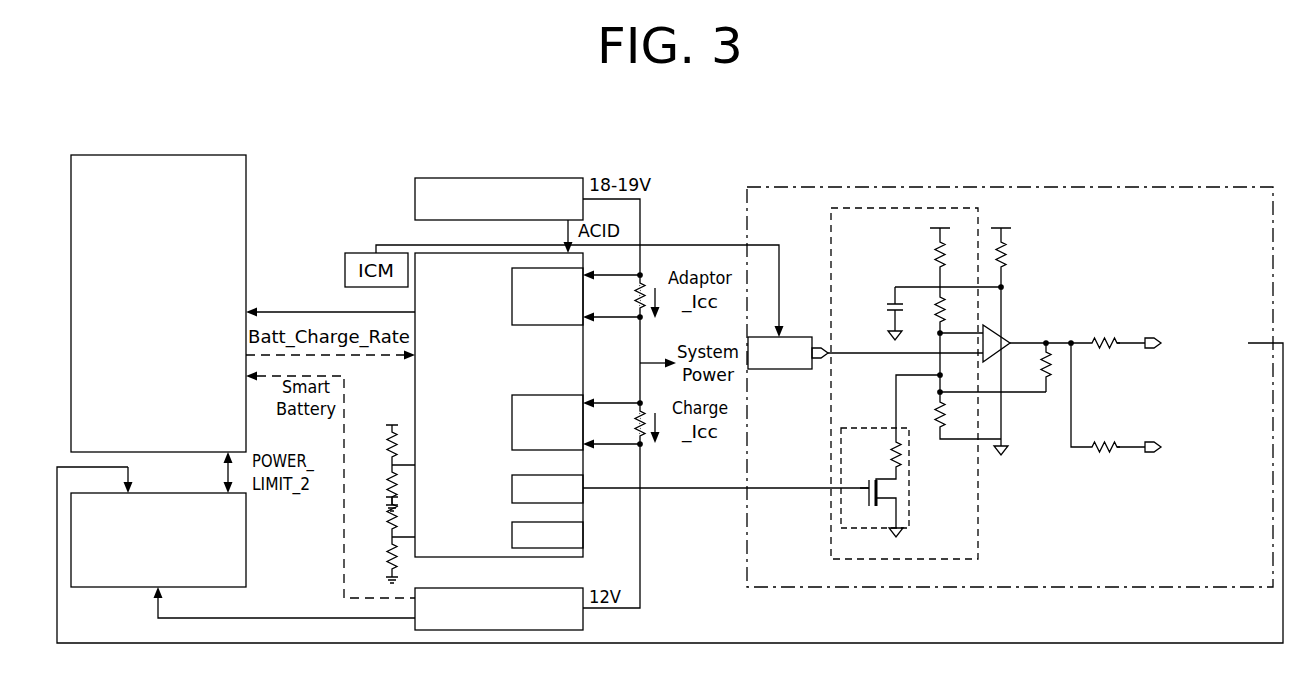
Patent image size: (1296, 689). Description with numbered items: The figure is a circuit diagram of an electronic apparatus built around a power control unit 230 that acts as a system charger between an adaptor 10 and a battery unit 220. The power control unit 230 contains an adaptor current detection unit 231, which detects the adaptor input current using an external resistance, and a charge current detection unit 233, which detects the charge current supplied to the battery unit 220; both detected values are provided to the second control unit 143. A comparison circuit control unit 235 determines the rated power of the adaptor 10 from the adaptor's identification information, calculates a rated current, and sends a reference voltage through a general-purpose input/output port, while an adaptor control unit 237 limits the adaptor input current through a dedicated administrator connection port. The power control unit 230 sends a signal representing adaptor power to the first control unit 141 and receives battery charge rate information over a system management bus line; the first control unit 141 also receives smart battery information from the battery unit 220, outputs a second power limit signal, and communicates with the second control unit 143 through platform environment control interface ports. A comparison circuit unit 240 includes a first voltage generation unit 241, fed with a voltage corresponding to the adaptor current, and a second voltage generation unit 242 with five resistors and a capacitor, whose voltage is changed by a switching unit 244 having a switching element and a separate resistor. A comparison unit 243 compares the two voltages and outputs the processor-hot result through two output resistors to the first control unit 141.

The adaptor 10 is at (428, 178).
The first control unit 141 is at (183, 155).
The second control unit 143 is at (246, 552).
The battery unit 220 is at (583, 621).
The power control unit 230 is at (415, 253).
The adaptor current detection unit 231 is at (567, 326).
The charge current detection unit 233 is at (568, 395).
The comparison circuit control unit 235 is at (570, 475).
The adaptor control unit 237 is at (570, 522).
The comparison circuit unit 240 is at (1090, 187).
The first voltage generation unit 241 is at (789, 369).
The second voltage generation unit 242 is at (831, 222).
The comparison unit 243 is at (993, 329).
The switching unit 244 is at (912, 493).